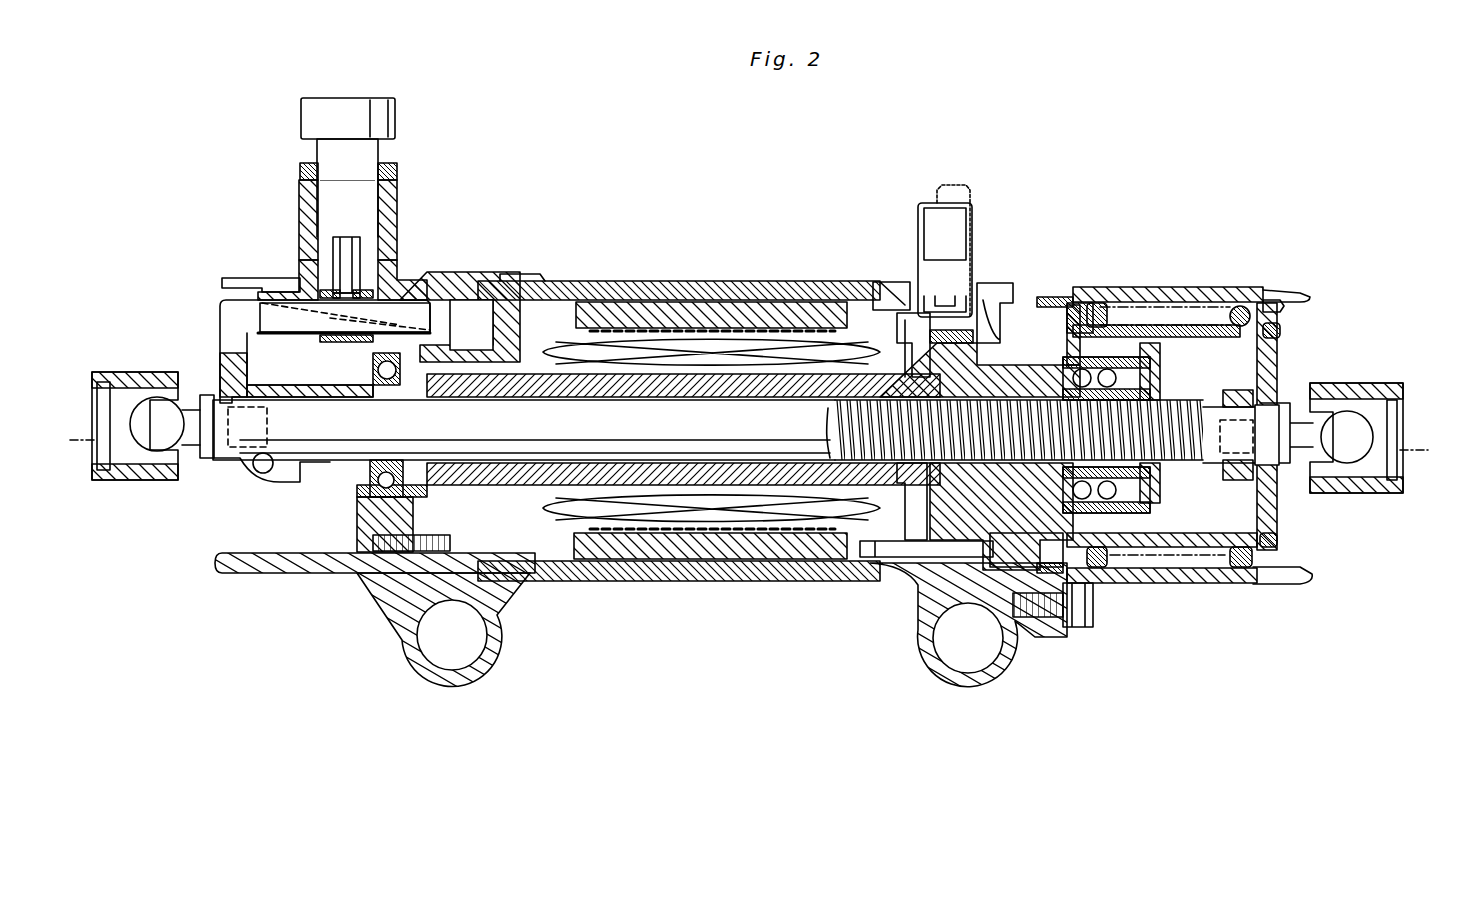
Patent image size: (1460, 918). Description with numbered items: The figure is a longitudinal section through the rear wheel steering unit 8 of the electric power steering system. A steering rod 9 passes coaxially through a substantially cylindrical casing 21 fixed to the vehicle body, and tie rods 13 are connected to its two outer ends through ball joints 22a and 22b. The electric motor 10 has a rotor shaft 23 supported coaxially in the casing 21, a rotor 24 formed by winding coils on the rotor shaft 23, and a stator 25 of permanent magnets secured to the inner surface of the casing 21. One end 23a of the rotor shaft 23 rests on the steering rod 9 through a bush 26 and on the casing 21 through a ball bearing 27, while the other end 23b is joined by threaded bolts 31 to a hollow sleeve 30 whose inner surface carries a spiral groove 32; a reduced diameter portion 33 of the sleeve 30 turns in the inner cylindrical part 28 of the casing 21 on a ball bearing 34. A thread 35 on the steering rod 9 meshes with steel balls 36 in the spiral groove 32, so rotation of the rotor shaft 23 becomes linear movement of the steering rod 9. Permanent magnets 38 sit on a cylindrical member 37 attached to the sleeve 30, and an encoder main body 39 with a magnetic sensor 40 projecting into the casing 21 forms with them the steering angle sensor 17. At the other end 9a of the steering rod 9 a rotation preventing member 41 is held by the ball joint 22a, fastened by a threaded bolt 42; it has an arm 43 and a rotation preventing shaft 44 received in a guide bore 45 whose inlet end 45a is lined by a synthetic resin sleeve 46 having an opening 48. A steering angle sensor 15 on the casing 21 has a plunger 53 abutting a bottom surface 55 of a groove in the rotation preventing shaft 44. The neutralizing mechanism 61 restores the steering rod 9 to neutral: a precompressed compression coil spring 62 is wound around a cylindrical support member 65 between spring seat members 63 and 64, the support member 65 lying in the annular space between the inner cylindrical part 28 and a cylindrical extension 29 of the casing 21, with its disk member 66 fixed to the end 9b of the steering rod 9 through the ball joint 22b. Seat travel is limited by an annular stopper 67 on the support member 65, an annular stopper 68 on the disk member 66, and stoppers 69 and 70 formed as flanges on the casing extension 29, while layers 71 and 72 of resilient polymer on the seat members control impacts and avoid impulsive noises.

The rear wheel steering unit 8 is at (783, 235).
The steering rod 9 is at (690, 435).
The other end of steering rod 9a is at (232, 388).
The end of steering rod 9b is at (1240, 400).
The electric motor 10 is at (651, 300).
The tie rods 13 is at (1398, 398).
The steering angle sensor 15 is at (395, 118).
The steering angle sensor 17 is at (918, 215).
The casing 21 is at (826, 582).
The ball joint 22a is at (142, 482).
The ball joint 22b is at (1356, 495).
The rotor shaft 23 is at (573, 456).
The one end of rotor shaft 23a is at (412, 478).
The other end of rotor shaft 23b is at (900, 348).
The rotor 24 is at (562, 512).
The stator 25 is at (665, 562).
The bush 26 is at (374, 463).
The ball bearing 27 is at (375, 490).
The inner cylindrical part of casing 28 is at (1105, 358).
The cylindrical extension of casing 29 is at (1170, 290).
The hollow sleeve 30 is at (1020, 300).
The threaded bolts 31 is at (910, 545).
The spiral groove 32 is at (1050, 498).
The reduced diameter portion 33 is at (1150, 484).
The ball bearing 34 is at (1150, 510).
The thread 35 is at (1174, 410).
The steel balls 36 is at (1015, 500).
The cylindrical member 37 is at (962, 565).
The permanent magnets 38 is at (900, 290).
The encoder main body 39 is at (922, 240).
The magnetic sensor 40 is at (988, 290).
The rotation preventing member 41 is at (210, 432).
The threaded bolt 42 is at (268, 474).
The arm 43 is at (219, 330).
The rotation preventing shaft 44 is at (272, 300).
The guide bore 45 is at (470, 300).
The inlet end of guide bore 45a is at (376, 357).
The sleeve 46 is at (322, 342).
The opening 48 is at (330, 297).
The plunger 53 is at (372, 312).
The bottom surface 55 is at (402, 320).
The neutralizing mechanism 61 is at (1228, 284).
The compression coil spring 62 is at (1195, 306).
The spring seat member 63 is at (1108, 566).
The spring seat member 64 is at (1232, 566).
The cylindrical support member 65 is at (1210, 538).
The disk member 66 is at (1278, 507).
The annular stopper 67 is at (1087, 318).
The annular stopper 68 is at (1283, 333).
The stopper 69 is at (1080, 305).
The stopper 70 is at (1284, 300).
The layer of resilient polymer material 71 is at (1052, 298).
The layer of resilient polymer material 72 is at (1270, 586).